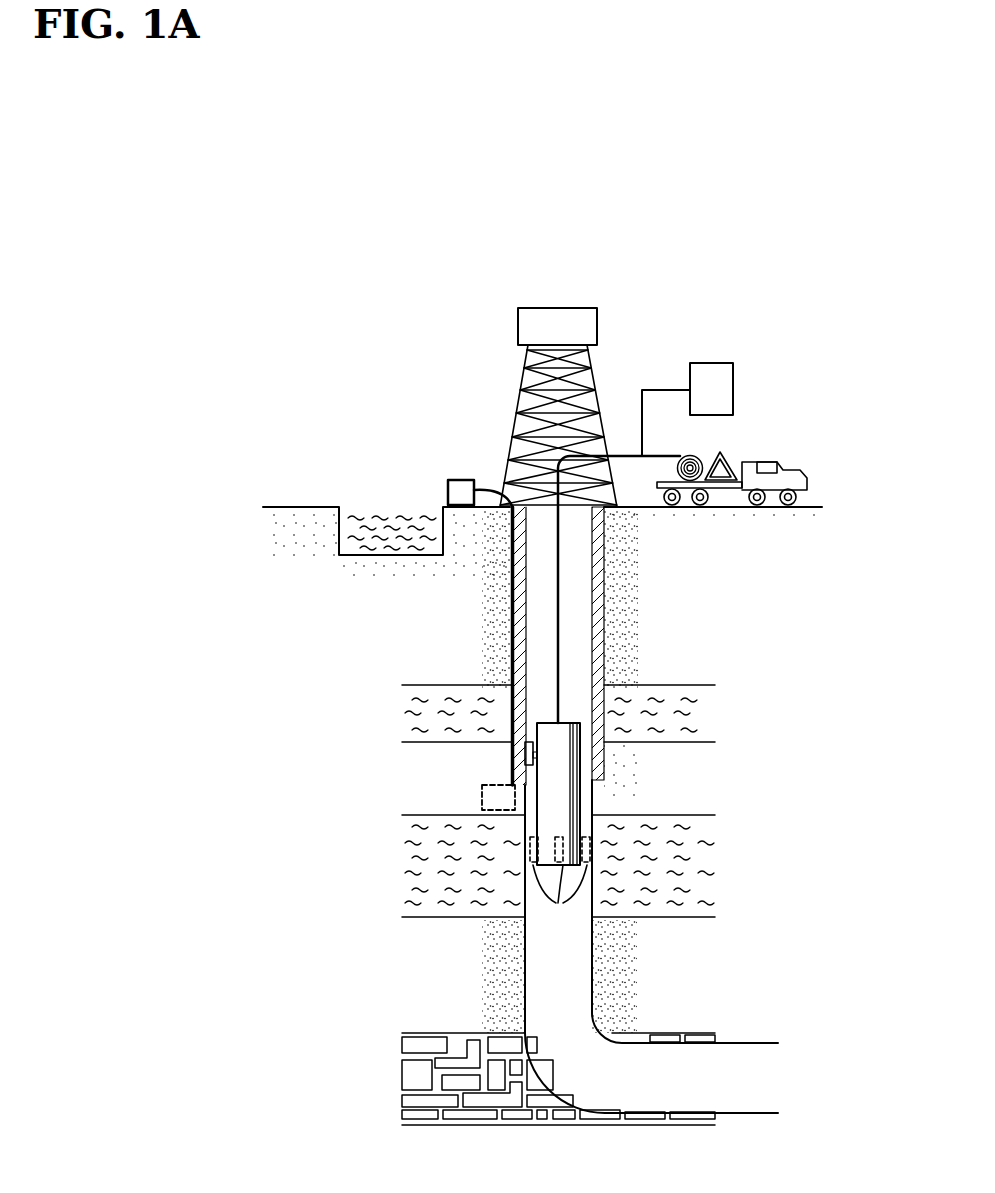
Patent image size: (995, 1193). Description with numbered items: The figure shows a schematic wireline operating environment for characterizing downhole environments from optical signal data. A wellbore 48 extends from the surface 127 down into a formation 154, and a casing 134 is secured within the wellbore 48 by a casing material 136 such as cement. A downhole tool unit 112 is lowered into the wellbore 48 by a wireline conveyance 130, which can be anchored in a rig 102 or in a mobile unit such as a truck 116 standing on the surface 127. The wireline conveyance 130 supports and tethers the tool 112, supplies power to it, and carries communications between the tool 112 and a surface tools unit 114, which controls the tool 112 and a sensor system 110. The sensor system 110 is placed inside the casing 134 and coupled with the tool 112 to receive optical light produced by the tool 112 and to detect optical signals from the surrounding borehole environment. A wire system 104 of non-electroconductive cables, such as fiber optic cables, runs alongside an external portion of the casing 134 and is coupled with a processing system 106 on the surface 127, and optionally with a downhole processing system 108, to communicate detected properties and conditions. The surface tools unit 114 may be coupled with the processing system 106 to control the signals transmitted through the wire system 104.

The rig 102 is at (597, 325).
The surface tools unit 114 is at (733, 378).
The wireline conveyance 130 is at (557, 470).
The truck 116 is at (795, 460).
The processing system 106 is at (447, 482).
The surface 127 is at (306, 504).
The casing 134 is at (523, 570).
The casing material 136 is at (512, 608).
The wire system 104 is at (510, 648).
The formation 154 is at (378, 636).
The sensor system 110 is at (525, 752).
The processing system 108 is at (480, 797).
The downhole tool unit 112 is at (567, 792).
The wellbore 48 is at (585, 983).